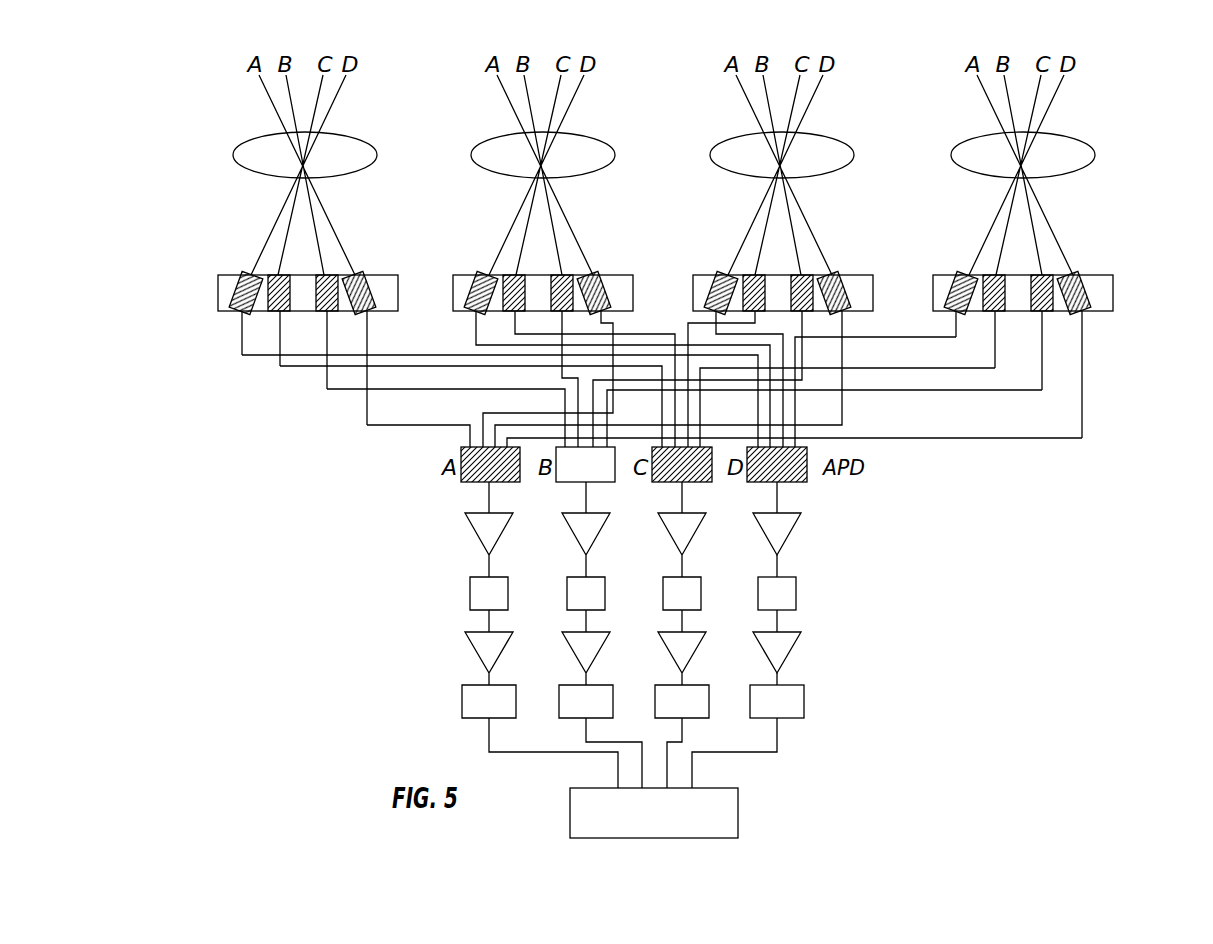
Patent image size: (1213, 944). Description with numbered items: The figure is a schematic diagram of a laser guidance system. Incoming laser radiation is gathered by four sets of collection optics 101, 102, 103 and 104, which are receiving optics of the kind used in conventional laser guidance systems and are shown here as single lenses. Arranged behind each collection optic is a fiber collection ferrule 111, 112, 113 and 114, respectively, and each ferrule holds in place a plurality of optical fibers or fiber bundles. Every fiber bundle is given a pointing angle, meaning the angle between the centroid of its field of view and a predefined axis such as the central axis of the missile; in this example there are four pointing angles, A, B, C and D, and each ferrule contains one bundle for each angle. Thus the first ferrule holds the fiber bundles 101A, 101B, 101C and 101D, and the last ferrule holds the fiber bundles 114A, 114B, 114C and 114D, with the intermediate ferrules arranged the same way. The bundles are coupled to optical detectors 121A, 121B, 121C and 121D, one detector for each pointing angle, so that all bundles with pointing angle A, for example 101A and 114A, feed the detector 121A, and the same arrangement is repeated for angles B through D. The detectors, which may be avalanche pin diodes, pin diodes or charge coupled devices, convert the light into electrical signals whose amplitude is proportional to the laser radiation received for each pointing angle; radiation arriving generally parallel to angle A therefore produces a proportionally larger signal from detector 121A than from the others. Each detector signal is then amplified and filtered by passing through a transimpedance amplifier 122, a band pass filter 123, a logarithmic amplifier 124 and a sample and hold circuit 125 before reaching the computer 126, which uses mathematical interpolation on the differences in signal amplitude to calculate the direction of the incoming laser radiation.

The collection optic 101 is at (375, 155).
The collection optic 102 is at (613, 155).
The collection optic 103 is at (852, 155).
The collection optic 104 is at (1093, 155).
The fiber collection ferrule 111 is at (398, 275).
The fiber collection ferrule 112 is at (633, 275).
The fiber collection ferrule 113 is at (873, 275).
The fiber collection ferrule 114 is at (1113, 275).
The optical fiber bundle 101A is at (408, 428).
The optical fiber bundle 101B is at (347, 391).
The optical fiber bundle 101C is at (293, 368).
The optical fiber bundle 101D is at (242, 345).
The optical fiber bundle 114A is at (1078, 437).
The optical fiber bundle 114B is at (996, 393).
The optical fiber bundle 114C is at (980, 367).
The optical fiber bundle 114D is at (952, 335).
The optical detector 121A is at (468, 484).
The optical detector 121B is at (574, 484).
The optical detector 121C is at (672, 484).
The optical detector 121D is at (768, 485).
The transimpedance amplifier 122 is at (787, 545).
The band pass filter 123 is at (797, 607).
The logarithmic amplifier 124 is at (787, 663).
The sample and hold circuit 125 is at (802, 707).
The computer 126 is at (740, 813).